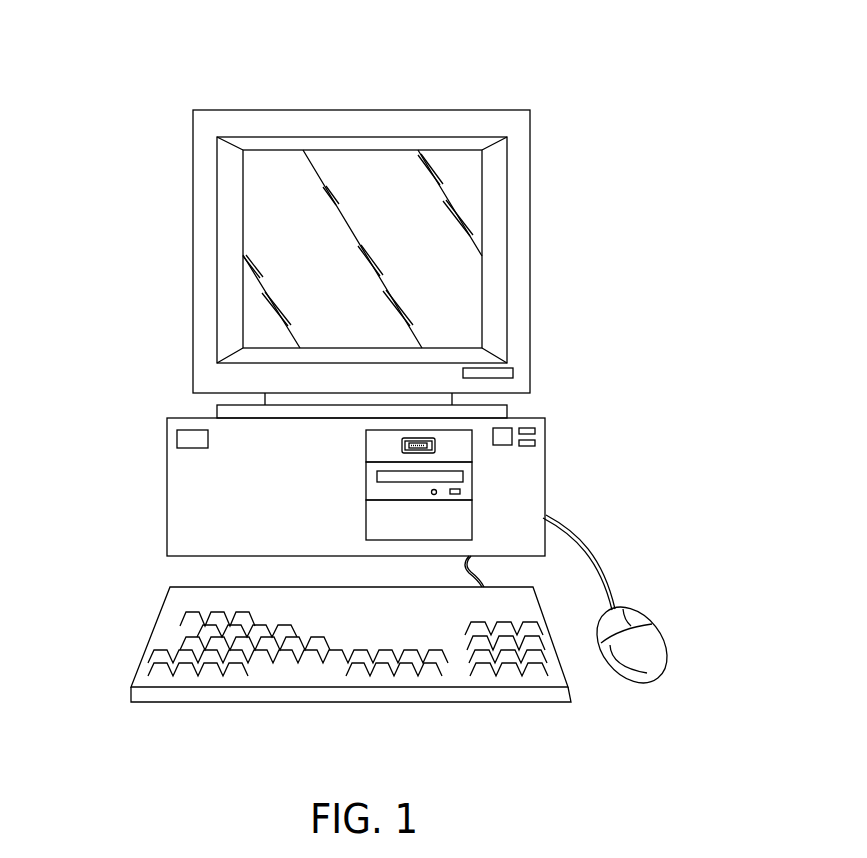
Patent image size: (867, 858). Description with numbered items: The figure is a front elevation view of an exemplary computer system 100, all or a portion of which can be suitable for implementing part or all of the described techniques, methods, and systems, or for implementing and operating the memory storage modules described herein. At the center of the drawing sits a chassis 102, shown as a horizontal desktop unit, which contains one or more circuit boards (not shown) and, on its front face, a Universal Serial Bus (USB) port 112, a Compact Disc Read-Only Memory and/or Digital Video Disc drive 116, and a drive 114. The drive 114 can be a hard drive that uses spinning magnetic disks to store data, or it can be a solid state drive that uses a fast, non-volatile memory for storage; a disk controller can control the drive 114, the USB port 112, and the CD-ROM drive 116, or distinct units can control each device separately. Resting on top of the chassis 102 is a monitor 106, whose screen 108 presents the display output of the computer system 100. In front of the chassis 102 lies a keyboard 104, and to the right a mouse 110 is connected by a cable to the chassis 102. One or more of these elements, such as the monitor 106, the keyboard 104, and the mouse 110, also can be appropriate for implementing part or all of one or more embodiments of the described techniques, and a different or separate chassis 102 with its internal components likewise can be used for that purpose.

The computer system 100 is at (525, 86).
The chassis 102 is at (167, 488).
The keyboard 104 is at (150, 630).
The monitor 106 is at (263, 108).
The screen 108 is at (287, 255).
The mouse 110 is at (650, 637).
The Universal Serial Bus (USB) port 112 is at (437, 442).
The drive 114 is at (464, 518).
The Compact Disc Read-Only Memory (CD-ROM) and/or Digital Video Disc (DVD) drive 116 is at (464, 482).